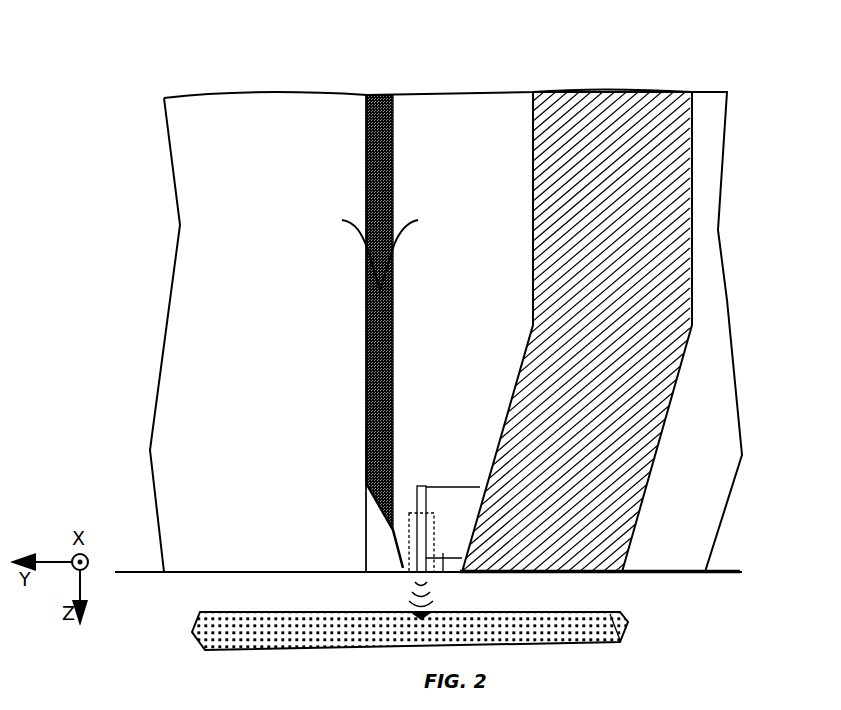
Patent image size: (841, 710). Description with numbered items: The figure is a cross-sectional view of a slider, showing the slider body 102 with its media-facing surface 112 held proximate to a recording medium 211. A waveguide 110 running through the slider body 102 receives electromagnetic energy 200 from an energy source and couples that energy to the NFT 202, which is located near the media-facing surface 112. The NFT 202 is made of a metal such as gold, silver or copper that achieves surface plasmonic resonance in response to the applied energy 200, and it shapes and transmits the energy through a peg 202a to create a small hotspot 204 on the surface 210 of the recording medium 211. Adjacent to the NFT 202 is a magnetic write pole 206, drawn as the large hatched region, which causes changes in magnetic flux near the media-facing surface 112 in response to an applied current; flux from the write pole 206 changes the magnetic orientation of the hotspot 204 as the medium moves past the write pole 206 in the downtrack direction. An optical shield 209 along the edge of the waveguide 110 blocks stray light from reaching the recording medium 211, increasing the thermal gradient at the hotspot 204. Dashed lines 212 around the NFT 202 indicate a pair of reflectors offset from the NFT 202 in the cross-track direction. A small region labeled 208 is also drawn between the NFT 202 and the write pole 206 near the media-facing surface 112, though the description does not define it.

The slider body 102 is at (148, 66).
The waveguide 110 is at (378, 94).
The media-facing surface 112 is at (730, 574).
The electromagnetic energy 200 is at (364, 250).
The NFT 202 is at (421, 484).
The peg 202a is at (412, 579).
The hotspot 204 is at (420, 640).
The magnetic write pole 206 is at (630, 91).
The gap 208 is at (443, 574).
The optical shield 209 is at (368, 531).
The surface 210 is at (582, 612).
The recording medium 211 is at (604, 622).
The dashed lines 212 is at (402, 572).